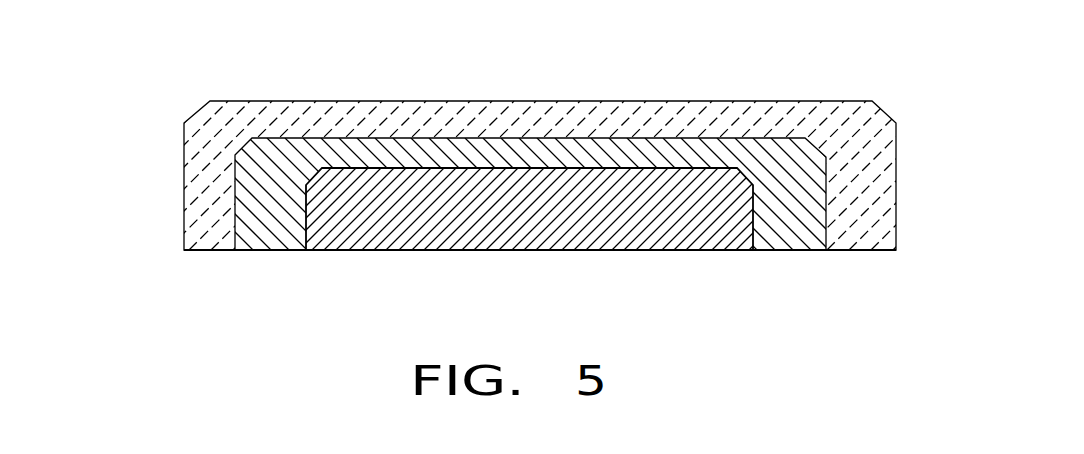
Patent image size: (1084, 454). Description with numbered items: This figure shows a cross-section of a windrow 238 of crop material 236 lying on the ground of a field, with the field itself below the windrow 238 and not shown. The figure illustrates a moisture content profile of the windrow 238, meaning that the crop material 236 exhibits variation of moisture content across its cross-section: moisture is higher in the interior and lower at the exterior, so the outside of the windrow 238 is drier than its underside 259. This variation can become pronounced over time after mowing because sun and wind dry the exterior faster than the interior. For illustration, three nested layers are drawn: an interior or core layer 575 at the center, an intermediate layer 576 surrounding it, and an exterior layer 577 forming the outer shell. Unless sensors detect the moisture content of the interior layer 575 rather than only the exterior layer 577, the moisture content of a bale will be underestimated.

The crop material 236 is at (538, 169).
The windrow 238 is at (538, 187).
The underside of windrow 259 is at (685, 252).
The interior layer 575 is at (376, 228).
The intermediate layer 576 is at (279, 230).
The exterior layer 577 is at (207, 228).